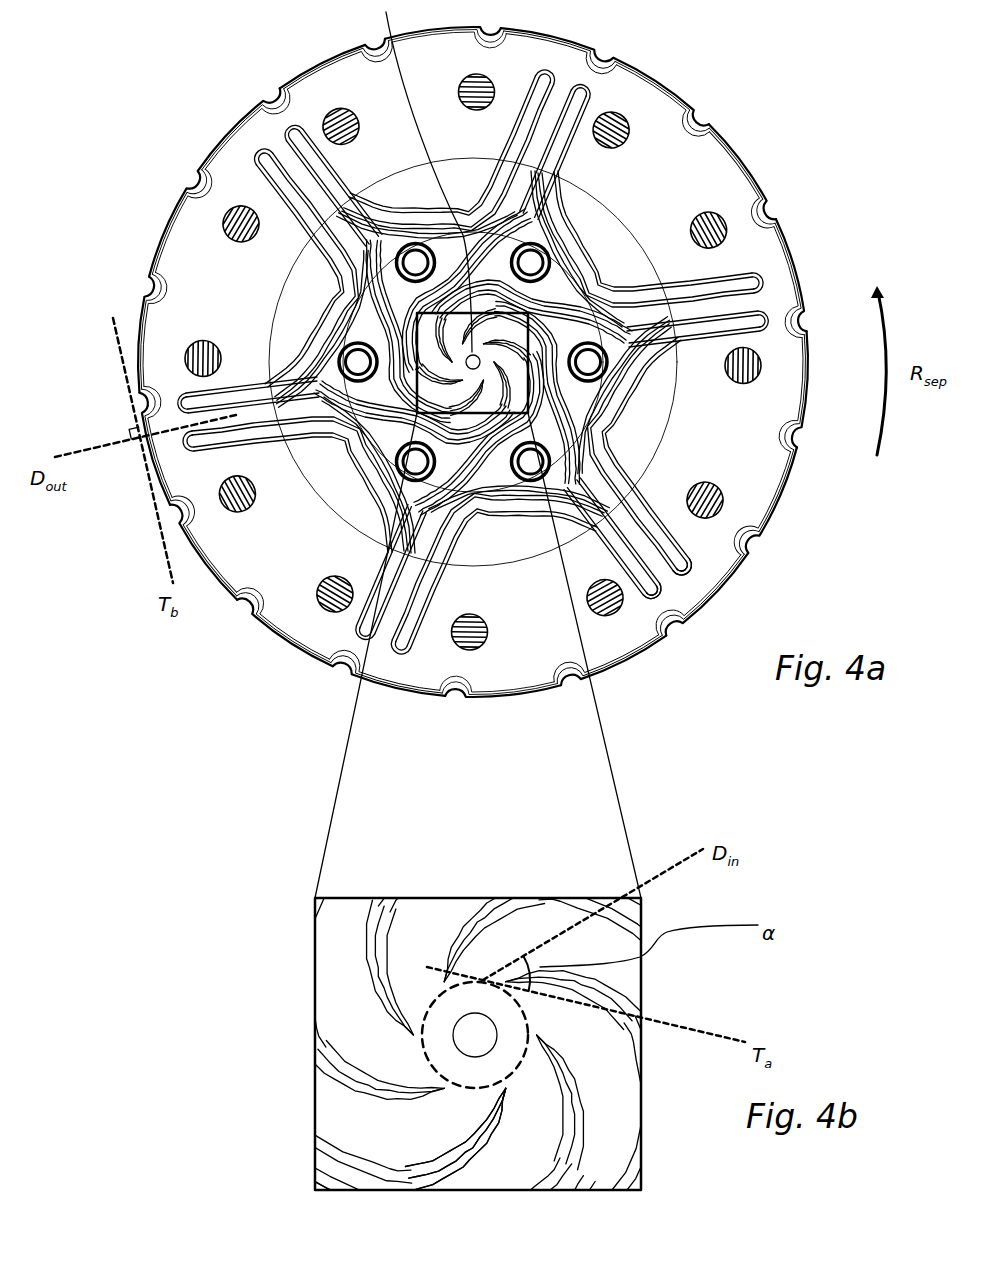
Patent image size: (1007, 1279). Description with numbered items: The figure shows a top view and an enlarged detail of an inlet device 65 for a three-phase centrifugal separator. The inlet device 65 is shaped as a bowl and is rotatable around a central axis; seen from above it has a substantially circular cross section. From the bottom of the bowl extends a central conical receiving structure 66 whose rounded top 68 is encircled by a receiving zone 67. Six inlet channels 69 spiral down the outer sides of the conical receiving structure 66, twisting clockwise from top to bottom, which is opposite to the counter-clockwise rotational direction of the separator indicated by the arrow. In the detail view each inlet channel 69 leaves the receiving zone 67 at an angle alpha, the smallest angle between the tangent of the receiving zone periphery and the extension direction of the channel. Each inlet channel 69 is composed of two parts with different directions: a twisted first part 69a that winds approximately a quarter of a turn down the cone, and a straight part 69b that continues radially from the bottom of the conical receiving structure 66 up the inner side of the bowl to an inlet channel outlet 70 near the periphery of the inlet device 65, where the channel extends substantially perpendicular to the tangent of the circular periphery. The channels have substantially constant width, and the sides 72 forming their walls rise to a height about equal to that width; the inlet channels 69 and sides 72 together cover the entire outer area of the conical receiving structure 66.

In FIG. 4a, the inlet device 65 is at (162, 60).
In FIG. 4a, the central conical receiving structure 66 is at (540, 340).
In FIG. 4a, the receiving zone 67 is at (481, 342).
In FIG. 4b, the receiving zone 67 is at (459, 1142).
In FIG. 4b, the top 68 is at (470, 1040).
In FIG. 4a, the inlet channel 69 is at (315, 198).
In FIG. 4b, the inlet channel 69 is at (475, 1035).
In FIG. 4a, the twisted first part 69a is at (540, 355).
In FIG. 4a, the straight part 69b is at (612, 490).
In FIG. 4a, the inlet channel outlet 70 is at (672, 573).
In FIG. 4b, the sides 72 is at (503, 649).